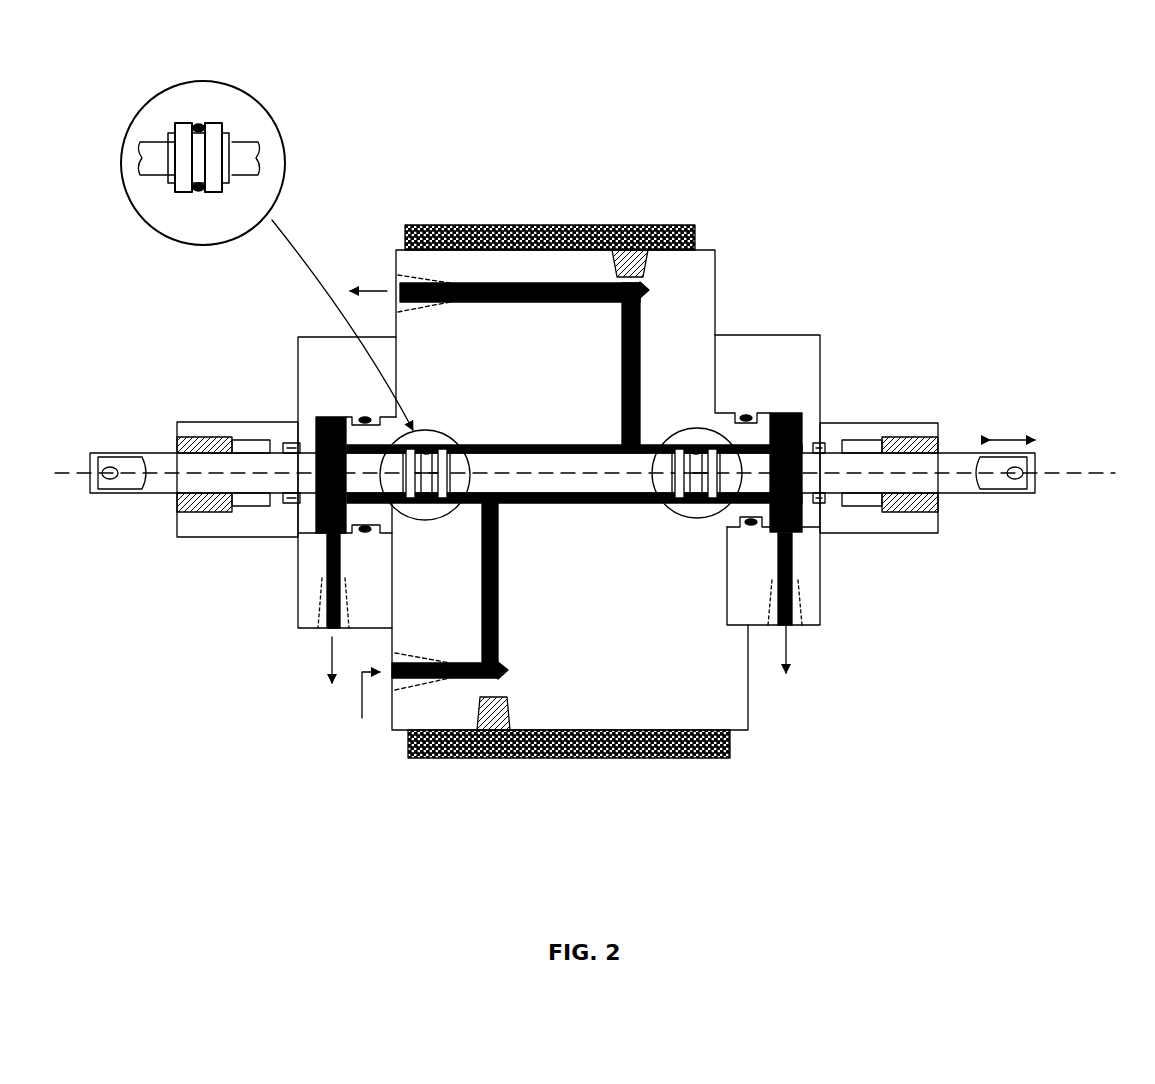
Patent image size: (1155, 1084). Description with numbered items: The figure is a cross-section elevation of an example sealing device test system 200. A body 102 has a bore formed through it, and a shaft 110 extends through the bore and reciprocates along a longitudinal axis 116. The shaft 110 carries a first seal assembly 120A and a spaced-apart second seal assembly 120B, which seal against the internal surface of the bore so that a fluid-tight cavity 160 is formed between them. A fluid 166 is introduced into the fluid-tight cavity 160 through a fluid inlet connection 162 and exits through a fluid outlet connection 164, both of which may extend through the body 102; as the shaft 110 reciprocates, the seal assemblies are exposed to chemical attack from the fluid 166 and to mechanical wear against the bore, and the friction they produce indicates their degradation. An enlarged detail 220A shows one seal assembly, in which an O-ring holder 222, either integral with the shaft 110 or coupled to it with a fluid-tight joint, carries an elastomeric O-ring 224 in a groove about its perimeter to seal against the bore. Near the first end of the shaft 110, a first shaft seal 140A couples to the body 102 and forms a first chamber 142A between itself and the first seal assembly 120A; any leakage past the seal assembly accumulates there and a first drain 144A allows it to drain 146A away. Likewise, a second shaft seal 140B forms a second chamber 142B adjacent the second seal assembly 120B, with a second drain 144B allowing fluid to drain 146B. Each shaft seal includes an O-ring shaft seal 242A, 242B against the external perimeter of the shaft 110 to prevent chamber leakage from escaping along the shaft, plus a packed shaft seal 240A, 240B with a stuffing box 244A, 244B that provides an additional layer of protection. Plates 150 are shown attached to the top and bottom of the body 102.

The sealing device test system 200 is at (1049, 70).
The body 102 is at (558, 490).
The shaft 110 is at (135, 493).
The longitudinal axis 116 is at (1085, 480).
The first seal assembly 120A is at (425, 520).
The second seal assembly 120B is at (697, 518).
The first shaft seal 140A is at (298, 338).
The second shaft seal 140B is at (820, 336).
The first chamber 142A is at (320, 417).
The second chamber 142B is at (802, 413).
The first drain 144A is at (327, 570).
The second drain 144B is at (792, 560).
The drain flow from first chamber 146A is at (332, 660).
The drain flow from second chamber 146B is at (786, 645).
The mounting plate 150 is at (530, 224).
The fluid-tight cavity 160 is at (572, 503).
The fluid inlet connection 162 is at (498, 613).
The fluid outlet connection 164 is at (640, 362).
The fluid 166 is at (387, 291).
The seal detail 220A is at (267, 246).
The O-ring holder 222 is at (200, 163).
The O-ring 224 is at (198, 124).
The first packed shaft seal 240A is at (177, 437).
The second packed shaft seal 240B is at (938, 437).
The first O-ring shaft seal 242A is at (287, 443).
The second O-ring shaft seal 242B is at (822, 443).
The first stuffing box 244A is at (200, 512).
The second stuffing box 244B is at (915, 512).